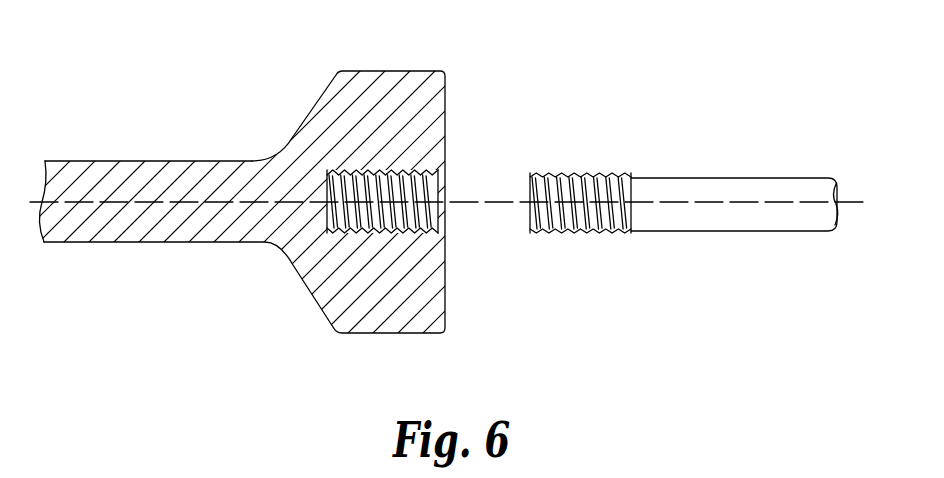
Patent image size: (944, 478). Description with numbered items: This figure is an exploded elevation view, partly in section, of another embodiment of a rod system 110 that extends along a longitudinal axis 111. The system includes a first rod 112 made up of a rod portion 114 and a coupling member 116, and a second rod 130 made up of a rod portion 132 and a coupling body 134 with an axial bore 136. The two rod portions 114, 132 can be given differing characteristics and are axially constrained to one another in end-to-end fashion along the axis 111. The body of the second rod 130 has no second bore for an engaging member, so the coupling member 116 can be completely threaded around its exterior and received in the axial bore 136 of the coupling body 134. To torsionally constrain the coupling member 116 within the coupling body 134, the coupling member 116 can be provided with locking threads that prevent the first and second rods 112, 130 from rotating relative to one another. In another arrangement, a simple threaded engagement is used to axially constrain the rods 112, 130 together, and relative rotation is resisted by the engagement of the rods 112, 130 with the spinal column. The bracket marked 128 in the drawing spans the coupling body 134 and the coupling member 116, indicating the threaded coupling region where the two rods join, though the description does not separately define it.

The rod system 110 is at (523, 70).
The longitudinal axis 111 is at (765, 205).
The first rod 112 is at (664, 178).
The rod portion 114 is at (742, 187).
The coupling member 116 is at (578, 235).
The threaded connection 128 is at (633, 335).
The second rod 130 is at (180, 161).
The rod portion 132 is at (138, 242).
The coupling body 134 is at (383, 71).
The axial bore 136 is at (412, 179).